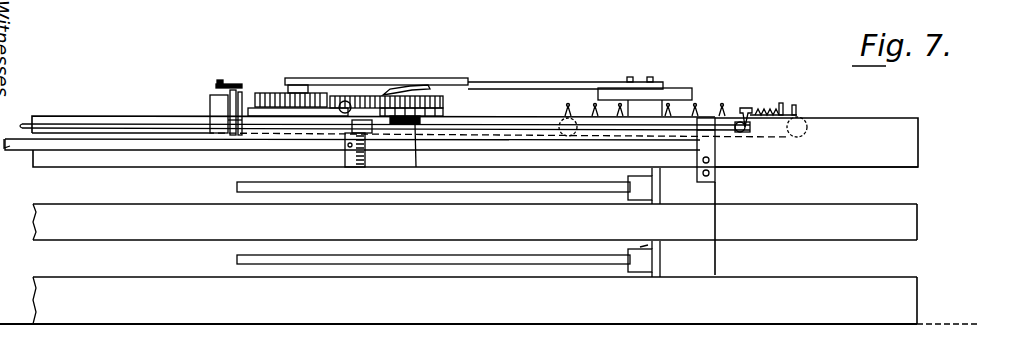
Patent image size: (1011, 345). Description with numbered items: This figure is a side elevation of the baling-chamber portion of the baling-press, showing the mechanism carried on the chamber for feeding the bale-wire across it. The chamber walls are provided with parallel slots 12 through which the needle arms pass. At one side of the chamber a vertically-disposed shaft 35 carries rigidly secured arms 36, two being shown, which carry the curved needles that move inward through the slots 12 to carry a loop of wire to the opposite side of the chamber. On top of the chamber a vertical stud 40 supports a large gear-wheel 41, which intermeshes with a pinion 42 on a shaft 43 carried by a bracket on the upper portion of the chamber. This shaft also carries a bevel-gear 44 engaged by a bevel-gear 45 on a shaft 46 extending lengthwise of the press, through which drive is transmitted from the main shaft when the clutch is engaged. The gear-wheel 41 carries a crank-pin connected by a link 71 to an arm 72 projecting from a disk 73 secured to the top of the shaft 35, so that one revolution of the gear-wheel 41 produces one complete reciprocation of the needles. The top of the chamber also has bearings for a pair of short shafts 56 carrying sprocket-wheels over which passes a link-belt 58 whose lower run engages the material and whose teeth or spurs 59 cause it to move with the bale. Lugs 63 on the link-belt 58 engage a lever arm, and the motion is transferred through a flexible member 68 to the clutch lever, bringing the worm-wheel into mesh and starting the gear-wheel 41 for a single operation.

The slots 12 is at (850, 197).
The vertically-disposed shaft 35 is at (655, 244).
The arms 36 is at (525, 190).
The vertical stud 40 is at (348, 102).
The gear-wheel 41 is at (322, 95).
The pinion 42 is at (443, 103).
The shaft 43 is at (392, 90).
The bevel-gear 44 is at (413, 150).
The bevel-gear 45 is at (352, 160).
The shaft 46 is at (192, 145).
The short shafts 56 is at (803, 134).
The link-belt 58 is at (731, 110).
The teeth or spurs 59 is at (795, 106).
The lugs 63 is at (781, 104).
The flexible member 68 is at (728, 130).
The link 71 is at (437, 80).
The arm 72 is at (638, 99).
The disk 73 is at (675, 95).